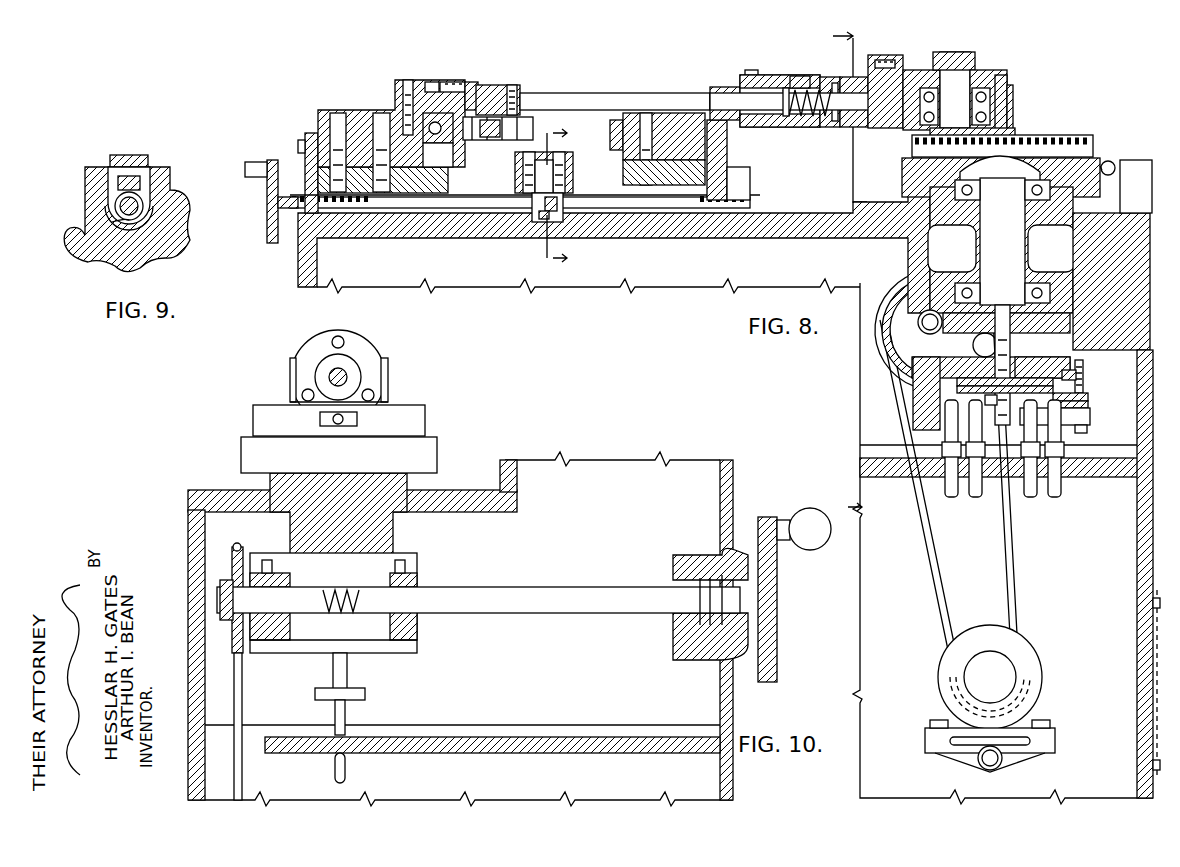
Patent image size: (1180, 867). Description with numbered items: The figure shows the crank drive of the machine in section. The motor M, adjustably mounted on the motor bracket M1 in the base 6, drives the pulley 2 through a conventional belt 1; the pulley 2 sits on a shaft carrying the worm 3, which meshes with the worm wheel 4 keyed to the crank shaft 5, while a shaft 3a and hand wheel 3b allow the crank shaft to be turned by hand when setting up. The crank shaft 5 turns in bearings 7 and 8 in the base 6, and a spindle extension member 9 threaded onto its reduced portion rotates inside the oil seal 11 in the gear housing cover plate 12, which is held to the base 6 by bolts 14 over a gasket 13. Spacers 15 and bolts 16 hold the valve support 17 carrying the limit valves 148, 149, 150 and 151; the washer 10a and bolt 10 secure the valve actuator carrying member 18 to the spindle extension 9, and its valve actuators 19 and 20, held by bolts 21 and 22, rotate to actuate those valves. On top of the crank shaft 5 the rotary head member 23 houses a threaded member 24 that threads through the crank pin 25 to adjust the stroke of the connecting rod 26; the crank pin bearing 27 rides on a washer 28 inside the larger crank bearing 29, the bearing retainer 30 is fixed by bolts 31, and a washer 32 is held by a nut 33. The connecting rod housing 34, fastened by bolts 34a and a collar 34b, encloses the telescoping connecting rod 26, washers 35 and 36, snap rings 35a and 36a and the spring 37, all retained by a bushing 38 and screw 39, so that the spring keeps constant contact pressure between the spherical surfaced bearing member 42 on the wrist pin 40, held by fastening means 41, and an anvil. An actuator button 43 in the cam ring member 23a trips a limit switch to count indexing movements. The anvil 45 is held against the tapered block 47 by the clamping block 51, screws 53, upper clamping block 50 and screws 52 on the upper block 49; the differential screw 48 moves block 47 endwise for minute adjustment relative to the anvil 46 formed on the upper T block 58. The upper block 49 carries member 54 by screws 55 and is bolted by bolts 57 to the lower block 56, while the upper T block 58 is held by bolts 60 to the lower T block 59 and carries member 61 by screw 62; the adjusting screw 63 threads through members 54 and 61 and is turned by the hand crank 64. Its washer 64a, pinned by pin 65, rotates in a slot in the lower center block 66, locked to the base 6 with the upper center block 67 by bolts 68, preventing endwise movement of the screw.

In FIG. 8, the belt 1 is at (1012, 560).
In FIG. 10, the belt 1 is at (244, 697).
In FIG. 8, the pulley 2 is at (892, 292).
In FIG. 10, the pulley 2 is at (232, 551).
In FIG. 8, the worm 3 is at (924, 317).
In FIG. 10, the worm 3 is at (330, 610).
In FIG. 10, the shaft 3a is at (576, 588).
In FIG. 10, the hand wheel 3b is at (779, 560).
In FIG. 8, the worm wheel 4 is at (1010, 348).
In FIG. 8, the crank shaft 5 is at (980, 246).
In FIG. 8, the base 6 is at (850, 225).
In FIG. 10, the base 6 is at (512, 500).
In FIG. 8, the bearing 7 is at (1060, 198).
In FIG. 8, the bearing 8 is at (1035, 283).
In FIG. 8, the spindle extension member 9 is at (1030, 348).
In FIG. 8, the bolt 10 is at (913, 272).
In FIG. 8, the washer 10a is at (997, 400).
In FIG. 8, the oil seal 11 is at (1025, 365).
In FIG. 8, the gear housing cover plate 12 is at (1085, 376).
In FIG. 8, the gasket 13 is at (1083, 364).
In FIG. 8, the bolts 14 is at (1088, 396).
In FIG. 8, the spacers 15 is at (1088, 405).
In FIG. 8, the bolts 16 is at (1087, 432).
In FIG. 8, the valve support 17 is at (1090, 418).
In FIG. 8, the valve actuator carrying member 18 is at (940, 420).
In FIG. 8, the valve actuator 19 is at (960, 360).
In FIG. 8, the valve actuator 20 is at (1035, 393).
In FIG. 8, the bolt 21 is at (940, 333).
In FIG. 8, the bolt 22 is at (1030, 383).
In FIG. 8, the rotary head member 23 is at (1045, 140).
In FIG. 8, the cam ring member 23a is at (1073, 236).
In FIG. 10, the cam ring member 23a is at (437, 455).
In FIG. 8, the threaded member 24 is at (1025, 134).
In FIG. 8, the crank pin 25 is at (952, 52).
In FIG. 8, the connecting rod 26 is at (550, 93).
In FIG. 8, the crank pin bearing 27 is at (1010, 102).
In FIG. 8, the washer 28 is at (930, 133).
In FIG. 8, the larger crank bearing 29 is at (892, 57).
In FIG. 8, the bearing retainer 30 is at (1007, 80).
In FIG. 10, the bearing retainer 30 is at (388, 378).
In FIG. 8, the bolts 31 is at (925, 75).
In FIG. 8, the washer 32 is at (1000, 72).
In FIG. 10, the washer 32 is at (385, 360).
In FIG. 8, the nut 33 is at (968, 55).
In FIG. 8, the connecting rod housing 34 is at (775, 76).
In FIG. 10, the connecting rod housing 34 is at (370, 340).
In FIG. 8, the bolts 34a is at (870, 62).
In FIG. 10, the bolts 34a is at (340, 336).
In FIG. 8, the collar 34b is at (848, 127).
In FIG. 8, the washer 35 is at (835, 121).
In FIG. 8, the snap ring 35a is at (832, 77).
In FIG. 8, the washer 36 is at (805, 118).
In FIG. 8, the snap ring 36a is at (786, 118).
In FIG. 8, the spring 37 is at (800, 76).
In FIG. 8, the bushing 38 is at (726, 90).
In FIG. 8, the screw 39 is at (749, 72).
In FIG. 8, the wrist pin 40 is at (495, 85).
In FIG. 8, the fastening means 41 is at (513, 85).
In FIG. 8, the spherical surfaced bearing member 42 is at (533, 126).
In FIG. 8, the actuator button 43 is at (1108, 161).
In FIG. 8, the anvil 45 is at (495, 140).
In FIG. 8, the anvil 46 is at (610, 118).
In FIG. 8, the block 47 is at (445, 150).
In FIG. 8, the differential screw 48 is at (447, 135).
In FIG. 8, the upper block 49 is at (382, 111).
In FIG. 8, the upper clamping block 50 is at (432, 82).
In FIG. 8, the clamping block 51 is at (455, 82).
In FIG. 8, the screws 52 is at (408, 80).
In FIG. 8, the screws 53 is at (473, 82).
In FIG. 8, the member 54 is at (310, 133).
In FIG. 8, the screws 55 is at (300, 145).
In FIG. 8, the lower block 56 is at (448, 180).
In FIG. 8, the bolts 57 is at (340, 111).
In FIG. 8, the upper T block 58 is at (650, 112).
In FIG. 8, the lower T block 59 is at (623, 178).
In FIG. 8, the bolts 60 is at (645, 113).
In FIG. 8, the member 61 is at (740, 175).
In FIG. 8, the screw 62 is at (728, 140).
In FIG. 9, the adjusting screw 63 is at (148, 224).
In FIG. 8, the adjusting screw 63 is at (752, 203).
In FIG. 8, the hand crank 64 is at (267, 225).
In FIG. 9, the washer 64a is at (126, 224).
In FIG. 8, the washer 64a is at (560, 218).
In FIG. 9, the pin 65 is at (115, 210).
In FIG. 8, the pin 65 is at (540, 210).
In FIG. 9, the lower center block 66 is at (150, 182).
In FIG. 8, the lower center block 66 is at (573, 177).
In FIG. 9, the upper center block 67 is at (148, 160).
In FIG. 8, the upper center block 67 is at (573, 162).
In FIG. 8, the bolts 68 is at (560, 152).
In FIG. 8, the limit valve 148 is at (975, 500).
In FIG. 8, the limit valve 149 is at (1030, 500).
In FIG. 8, the limit valve 150 is at (950, 500).
In FIG. 8, the limit valve 151 is at (1135, 160).
In FIG. 8, the motor M is at (1036, 672).
In FIG. 8, the motor bracket M1 is at (1015, 762).